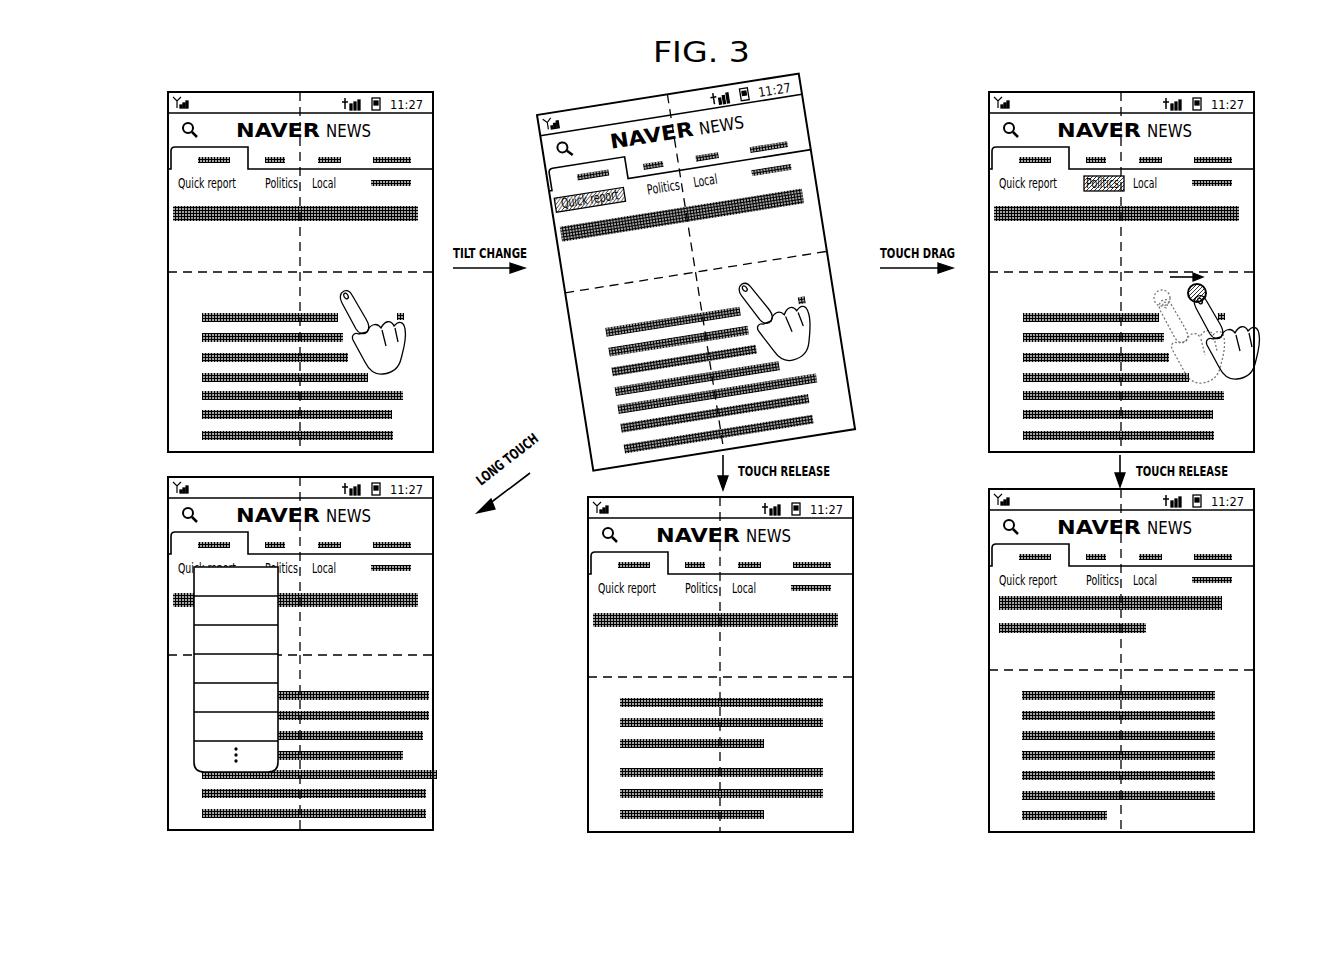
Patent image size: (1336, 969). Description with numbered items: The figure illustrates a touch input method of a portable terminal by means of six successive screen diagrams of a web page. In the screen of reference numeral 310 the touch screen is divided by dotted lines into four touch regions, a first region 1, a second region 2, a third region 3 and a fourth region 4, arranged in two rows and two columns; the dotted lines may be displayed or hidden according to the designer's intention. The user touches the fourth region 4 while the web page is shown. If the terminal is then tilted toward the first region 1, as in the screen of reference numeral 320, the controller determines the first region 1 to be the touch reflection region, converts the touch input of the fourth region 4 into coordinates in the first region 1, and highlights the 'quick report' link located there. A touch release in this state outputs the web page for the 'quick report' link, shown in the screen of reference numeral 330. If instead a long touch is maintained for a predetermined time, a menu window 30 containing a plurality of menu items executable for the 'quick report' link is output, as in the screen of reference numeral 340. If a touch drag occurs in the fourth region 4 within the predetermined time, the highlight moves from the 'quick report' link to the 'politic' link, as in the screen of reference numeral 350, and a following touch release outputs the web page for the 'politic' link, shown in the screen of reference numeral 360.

The first region 1 is at (287, 182).
The second region 2 is at (317, 207).
The third region 3 is at (287, 362).
The fourth region 4 is at (332, 376).
The menu window 30 is at (203, 669).
The exemplary diagram of a screen 310 is at (287, 267).
The exemplary diagram of a screen 320 is at (686, 270).
The exemplary diagram of a screen 330 is at (711, 664).
The exemplary diagram of a screen 340 is at (287, 652).
The exemplary diagram of a screen 350 is at (1108, 272).
The exemplary diagram of a screen 360 is at (1108, 660).